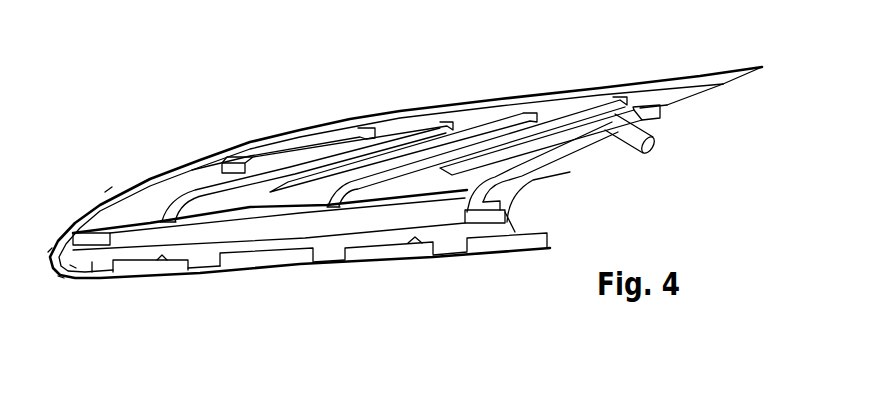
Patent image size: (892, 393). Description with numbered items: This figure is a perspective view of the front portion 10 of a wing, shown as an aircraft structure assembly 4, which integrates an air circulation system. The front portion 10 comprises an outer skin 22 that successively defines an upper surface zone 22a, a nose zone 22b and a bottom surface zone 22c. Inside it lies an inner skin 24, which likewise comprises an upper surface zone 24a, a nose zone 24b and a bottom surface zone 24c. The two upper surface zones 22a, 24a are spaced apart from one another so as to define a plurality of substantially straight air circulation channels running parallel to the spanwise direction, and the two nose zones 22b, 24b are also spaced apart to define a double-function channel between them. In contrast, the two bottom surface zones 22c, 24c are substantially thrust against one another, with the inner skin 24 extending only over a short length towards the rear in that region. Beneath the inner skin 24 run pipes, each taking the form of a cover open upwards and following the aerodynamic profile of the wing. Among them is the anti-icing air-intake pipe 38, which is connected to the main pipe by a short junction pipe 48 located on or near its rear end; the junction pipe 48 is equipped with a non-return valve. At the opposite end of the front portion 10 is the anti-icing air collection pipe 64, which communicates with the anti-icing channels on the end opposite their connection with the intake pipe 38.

The aircraft structure assembly 4 is at (197, 34).
The front portion of the wing 10 is at (160, 125).
The outer skin 22 is at (135, 178).
The upper surface zone of the outer skin 22a is at (107, 193).
The nose zone of the outer skin 22b is at (50, 245).
The bottom surface zone of the outer skin 22c is at (60, 277).
The inner skin 24 is at (92, 265).
The upper surface zone of the inner skin 24a is at (300, 143).
The nose zone of the inner skin 24b is at (73, 268).
The bottom surface zone of the inner skin 24c is at (133, 278).
The anti-icing air-intake pipe 38 is at (560, 160).
The junction pipe 48 is at (630, 153).
The anti-icing air collection pipe 64 is at (195, 172).